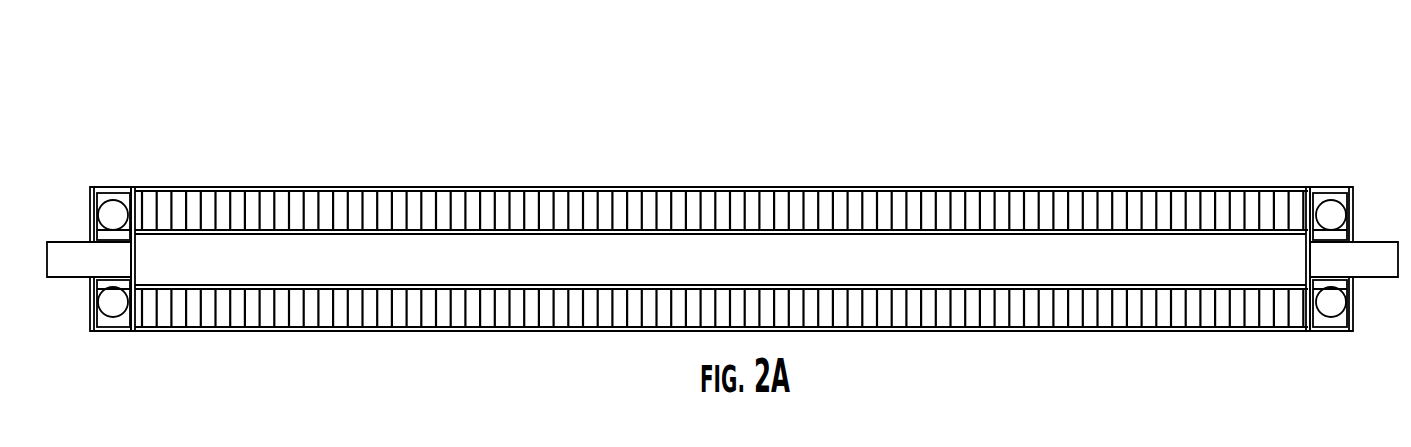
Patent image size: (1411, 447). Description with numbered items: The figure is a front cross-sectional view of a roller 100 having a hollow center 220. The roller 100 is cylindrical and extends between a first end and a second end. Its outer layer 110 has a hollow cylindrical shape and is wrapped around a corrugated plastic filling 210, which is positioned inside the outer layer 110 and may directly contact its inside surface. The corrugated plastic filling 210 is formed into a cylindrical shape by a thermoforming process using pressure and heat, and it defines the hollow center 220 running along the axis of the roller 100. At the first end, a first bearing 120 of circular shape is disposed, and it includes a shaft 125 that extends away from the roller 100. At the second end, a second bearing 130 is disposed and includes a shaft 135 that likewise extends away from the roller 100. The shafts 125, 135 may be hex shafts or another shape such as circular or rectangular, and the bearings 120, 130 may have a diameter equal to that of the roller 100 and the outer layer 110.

The roller 100 is at (298, 68).
The outer layer 110 is at (557, 187).
The first bearing 120 is at (118, 188).
The shaft 125 is at (72, 257).
The second bearing 130 is at (1328, 197).
The shaft 135 is at (1373, 252).
The corrugated plastic filling 210 is at (919, 207).
The hollow center 220 is at (1066, 260).